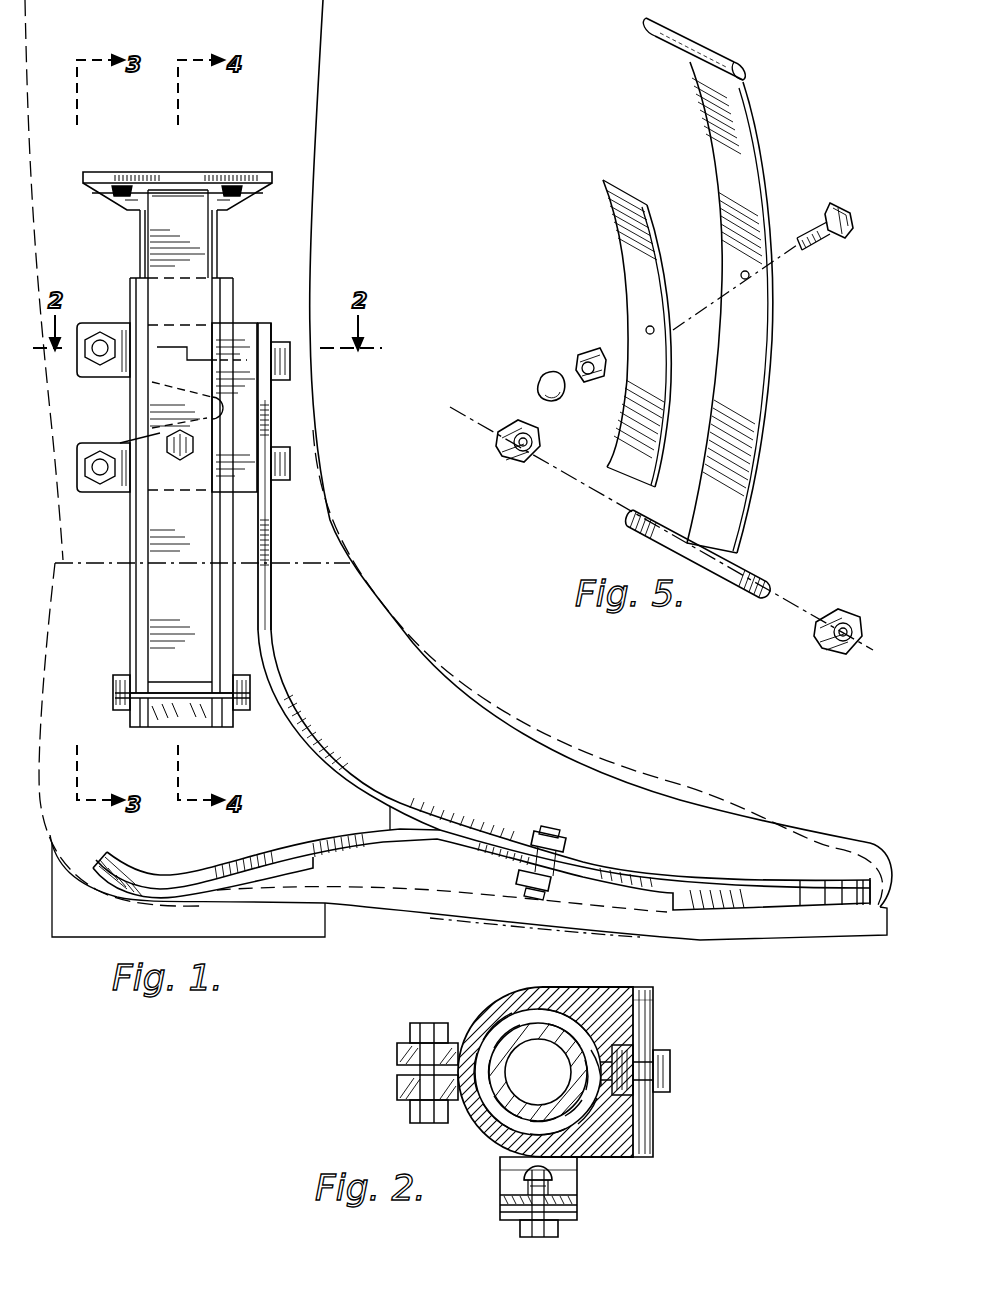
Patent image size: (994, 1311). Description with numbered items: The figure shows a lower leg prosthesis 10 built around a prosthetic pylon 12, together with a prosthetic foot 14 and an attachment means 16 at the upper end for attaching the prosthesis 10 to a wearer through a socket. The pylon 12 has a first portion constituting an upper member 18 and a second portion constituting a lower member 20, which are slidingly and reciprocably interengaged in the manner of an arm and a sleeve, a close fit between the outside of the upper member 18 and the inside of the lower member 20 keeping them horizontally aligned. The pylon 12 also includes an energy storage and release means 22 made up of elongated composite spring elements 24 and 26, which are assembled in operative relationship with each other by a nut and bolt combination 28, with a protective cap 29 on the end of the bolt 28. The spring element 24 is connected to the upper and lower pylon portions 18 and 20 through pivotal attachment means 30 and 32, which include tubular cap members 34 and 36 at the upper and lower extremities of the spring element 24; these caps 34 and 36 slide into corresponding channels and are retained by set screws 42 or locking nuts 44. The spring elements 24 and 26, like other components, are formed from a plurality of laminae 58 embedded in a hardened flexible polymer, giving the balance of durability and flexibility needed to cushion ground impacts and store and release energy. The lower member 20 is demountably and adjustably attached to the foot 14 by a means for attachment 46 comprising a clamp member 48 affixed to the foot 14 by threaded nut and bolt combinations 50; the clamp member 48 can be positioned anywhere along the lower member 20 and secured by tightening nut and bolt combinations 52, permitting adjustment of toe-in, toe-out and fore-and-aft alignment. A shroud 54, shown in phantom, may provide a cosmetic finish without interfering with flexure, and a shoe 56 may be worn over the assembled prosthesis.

In FIG. 1, the lower leg prosthesis 10 is at (458, 453).
In FIG. 1, the prosthetic pylon 12 is at (226, 450).
In FIG. 1, the prosthetic foot 14 is at (481, 761).
In FIG. 2, the prosthetic foot 14 is at (655, 1027).
In FIG. 1, the attachment means 16 is at (219, 197).
In FIG. 1, the upper member 18 is at (140, 232).
In FIG. 2, the upper member 18 is at (486, 1145).
In FIG. 1, the lower member 20 is at (130, 597).
In FIG. 2, the lower member 20 is at (497, 1152).
In FIG. 1, the energy storage and release means 22 is at (192, 580).
In FIG. 5, the energy storage and release means 22 is at (658, 143).
In FIG. 1, the spring element 24 is at (190, 612).
In FIG. 5, the spring element 24 is at (762, 456).
In FIG. 2, the spring element 24 is at (502, 1215).
In FIG. 5, the spring element 26 is at (626, 236).
In FIG. 2, the spring element 26 is at (578, 1198).
In FIG. 1, the nut and bolt combination 28 is at (195, 455).
In FIG. 5, the nut and bolt combination 28 is at (850, 234).
In FIG. 2, the nut and bolt combination 28 is at (556, 1236).
In FIG. 5, the protective cap 29 is at (538, 382).
In FIG. 2, the protective cap 29 is at (578, 1176).
In FIG. 1, the pivotal attachment means 30 is at (205, 181).
In FIG. 1, the pivotal attachment means 32 is at (207, 700).
In FIG. 1, the tubular cap member 34 is at (157, 182).
In FIG. 5, the tubular cap member 34 is at (725, 48).
In FIG. 1, the tubular cap member 36 is at (148, 694).
In FIG. 5, the tubular cap member 36 is at (643, 535).
In FIG. 1, the set screws 42 is at (121, 184).
In FIG. 1, the locking nuts 44 is at (240, 676).
In FIG. 5, the locking nuts 44 is at (520, 470).
In FIG. 1, the means for attachment 46 is at (270, 458).
In FIG. 2, the means for attachment 46 is at (475, 1008).
In FIG. 1, the clamp member 48 is at (240, 335).
In FIG. 2, the clamp member 48 is at (546, 988).
In FIG. 1, the threaded nut and bolt combinations 50 is at (272, 410).
In FIG. 2, the threaded nut and bolt combinations 50 is at (672, 1075).
In FIG. 1, the nut and bolt combinations 52 is at (100, 338).
In FIG. 2, the nut and bolt combinations 52 is at (405, 1032).
In FIG. 1, the shroud 54 is at (322, 68).
In FIG. 1, the shoe 56 is at (222, 938).
In FIG. 2, the laminae 58 is at (655, 998).